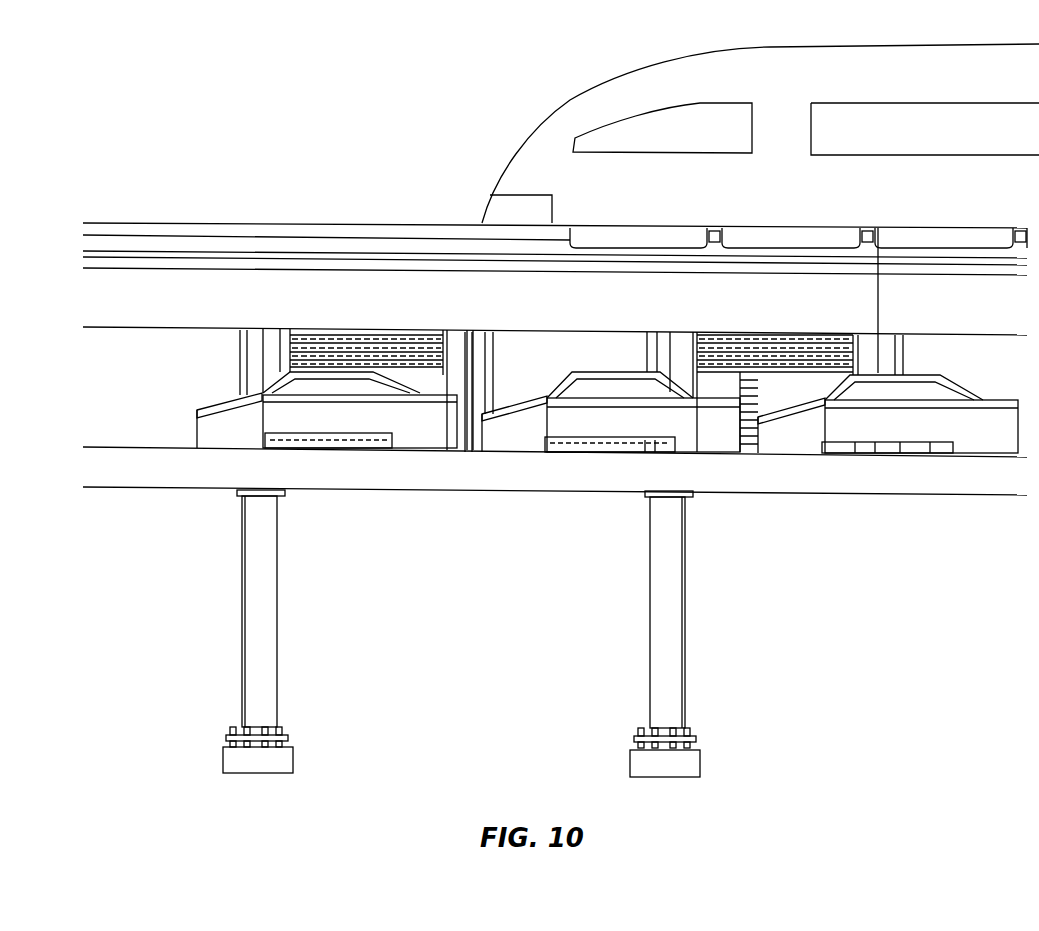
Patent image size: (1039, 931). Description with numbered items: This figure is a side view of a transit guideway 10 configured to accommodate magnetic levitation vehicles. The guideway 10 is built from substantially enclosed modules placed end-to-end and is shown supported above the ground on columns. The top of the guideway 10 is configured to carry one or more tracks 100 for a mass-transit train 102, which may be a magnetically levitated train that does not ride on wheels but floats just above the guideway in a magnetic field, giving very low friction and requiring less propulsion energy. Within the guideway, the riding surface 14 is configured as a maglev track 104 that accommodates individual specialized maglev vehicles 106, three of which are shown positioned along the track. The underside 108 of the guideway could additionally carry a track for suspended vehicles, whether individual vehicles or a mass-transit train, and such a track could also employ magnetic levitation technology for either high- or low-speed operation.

The transit guideway 10 is at (405, 512).
The riding surface 14 is at (128, 440).
The tracks 100 is at (372, 245).
The mass-transit train 102 is at (542, 156).
The maglev track 104 is at (155, 445).
The maglev vehicles 106 is at (227, 433).
The underside 108 is at (560, 493).